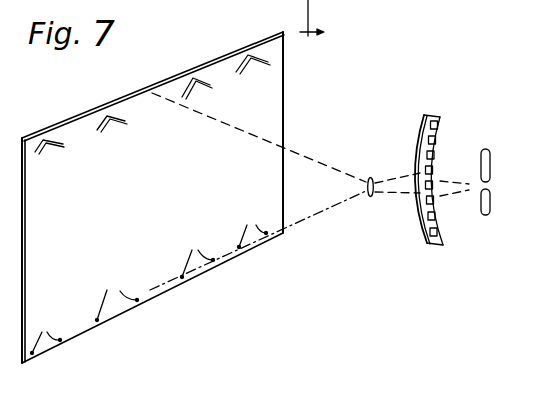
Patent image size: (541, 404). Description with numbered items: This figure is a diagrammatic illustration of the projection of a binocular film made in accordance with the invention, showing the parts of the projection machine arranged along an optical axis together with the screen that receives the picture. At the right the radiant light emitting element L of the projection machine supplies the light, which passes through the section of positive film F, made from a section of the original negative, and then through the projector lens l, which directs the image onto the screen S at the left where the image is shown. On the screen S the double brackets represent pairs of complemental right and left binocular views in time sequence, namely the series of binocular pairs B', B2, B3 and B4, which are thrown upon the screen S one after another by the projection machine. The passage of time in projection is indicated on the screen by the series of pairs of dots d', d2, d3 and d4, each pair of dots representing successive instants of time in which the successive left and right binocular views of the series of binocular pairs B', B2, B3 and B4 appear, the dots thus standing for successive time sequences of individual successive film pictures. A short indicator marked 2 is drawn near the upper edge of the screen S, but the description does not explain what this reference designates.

The screen S is at (153, 197).
The first binocular pair B' is at (43, 126).
The second binocular pair B2 is at (107, 103).
The third binocular pair B3 is at (188, 72).
The fourth binocular pair B4 is at (251, 46).
The section line indicator 2 is at (319, 22).
The projector lens l is at (368, 193).
The section of positive film F is at (422, 150).
The radiant light emitting element L is at (490, 191).
The first pair of dots d' is at (46, 336).
The second pair of dots d2 is at (117, 296).
The third pair of dots d3 is at (198, 255).
The fourth pair of dots d4 is at (253, 227).